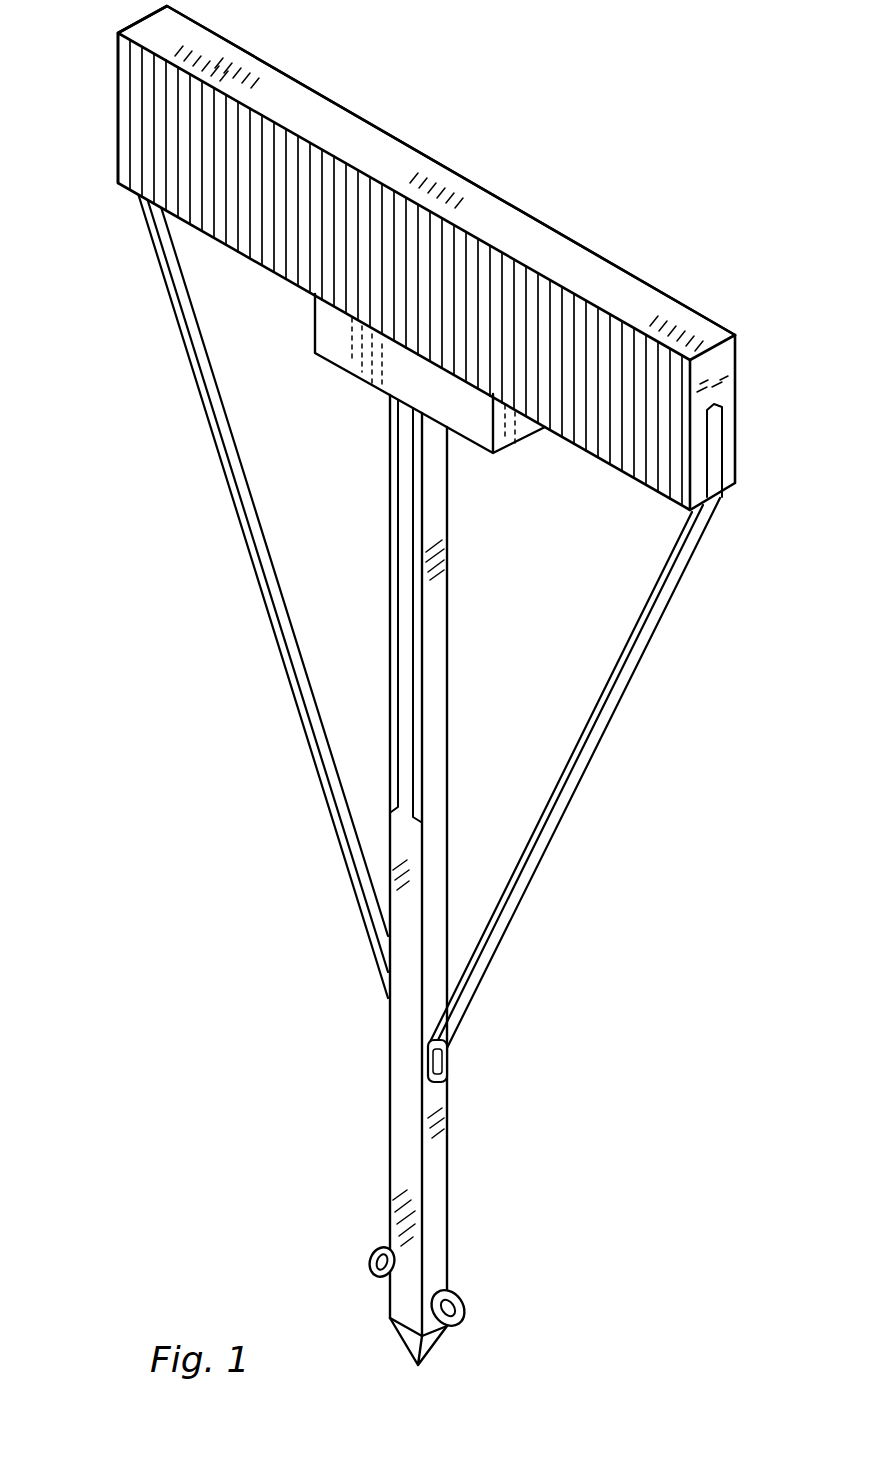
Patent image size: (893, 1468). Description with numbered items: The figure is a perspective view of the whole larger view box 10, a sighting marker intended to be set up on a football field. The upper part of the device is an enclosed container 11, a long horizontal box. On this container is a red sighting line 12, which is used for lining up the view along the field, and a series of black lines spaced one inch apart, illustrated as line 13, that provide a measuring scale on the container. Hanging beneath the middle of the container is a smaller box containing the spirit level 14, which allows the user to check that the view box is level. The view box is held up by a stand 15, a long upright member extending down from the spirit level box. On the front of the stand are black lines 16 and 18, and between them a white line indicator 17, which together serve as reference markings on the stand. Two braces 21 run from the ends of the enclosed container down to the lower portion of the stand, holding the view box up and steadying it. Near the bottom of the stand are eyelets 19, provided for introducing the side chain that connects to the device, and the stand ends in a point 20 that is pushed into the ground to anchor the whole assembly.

The larger view box 10 is at (442, 133).
The enclosed container 11 is at (682, 303).
The red sighting line 12 is at (405, 277).
The black lines 13 is at (150, 154).
The spirit level box 14 is at (340, 352).
The stand 15 is at (450, 612).
The black line on front of stand 16 is at (388, 583).
The white line indicator 17 is at (407, 683).
The black line on front of stand 18 is at (422, 765).
The eyelets 19 is at (370, 1258).
The point of the stand 20 is at (437, 1339).
The braces 21 is at (328, 785).